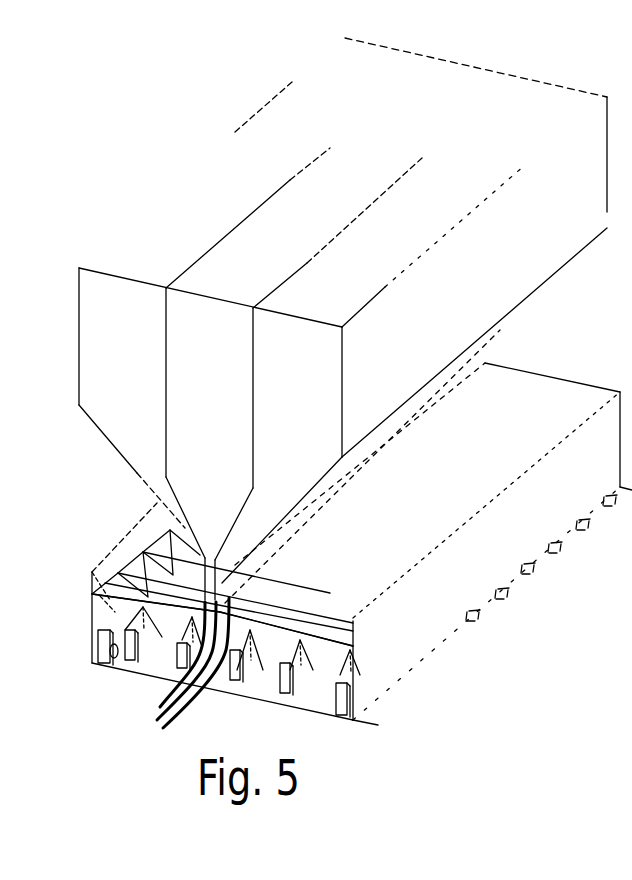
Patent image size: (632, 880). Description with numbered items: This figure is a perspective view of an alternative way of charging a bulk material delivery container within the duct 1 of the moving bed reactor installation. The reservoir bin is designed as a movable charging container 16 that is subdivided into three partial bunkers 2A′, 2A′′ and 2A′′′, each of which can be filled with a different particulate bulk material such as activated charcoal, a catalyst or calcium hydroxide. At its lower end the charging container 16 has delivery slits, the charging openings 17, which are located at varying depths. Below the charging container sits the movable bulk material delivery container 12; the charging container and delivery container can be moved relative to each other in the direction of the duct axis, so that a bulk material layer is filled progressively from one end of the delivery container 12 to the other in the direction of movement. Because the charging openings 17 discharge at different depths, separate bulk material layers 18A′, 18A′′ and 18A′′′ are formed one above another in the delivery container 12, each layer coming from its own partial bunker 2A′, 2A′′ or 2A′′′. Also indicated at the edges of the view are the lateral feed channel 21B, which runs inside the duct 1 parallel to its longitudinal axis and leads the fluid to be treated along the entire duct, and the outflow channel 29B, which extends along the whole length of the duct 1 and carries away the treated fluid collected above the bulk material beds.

The duct 1 is at (8, 109).
The partial bunker 2A′ is at (601, 62).
The partial bunker 2A′′ is at (332, 175).
The partial bunker 2A′′′ is at (172, 212).
The movable bulk material delivery container 12 is at (82, 630).
The movable charging container 16 is at (507, 64).
The charging openings 17 is at (173, 670).
The bulk material layer 18A′ is at (373, 530).
The bulk material layer 18A′′ is at (322, 630).
The bulk material layer 18A′′′ is at (337, 643).
The lateral feed channel 21B is at (0, 538).
The outflow channel 29B is at (15, 217).